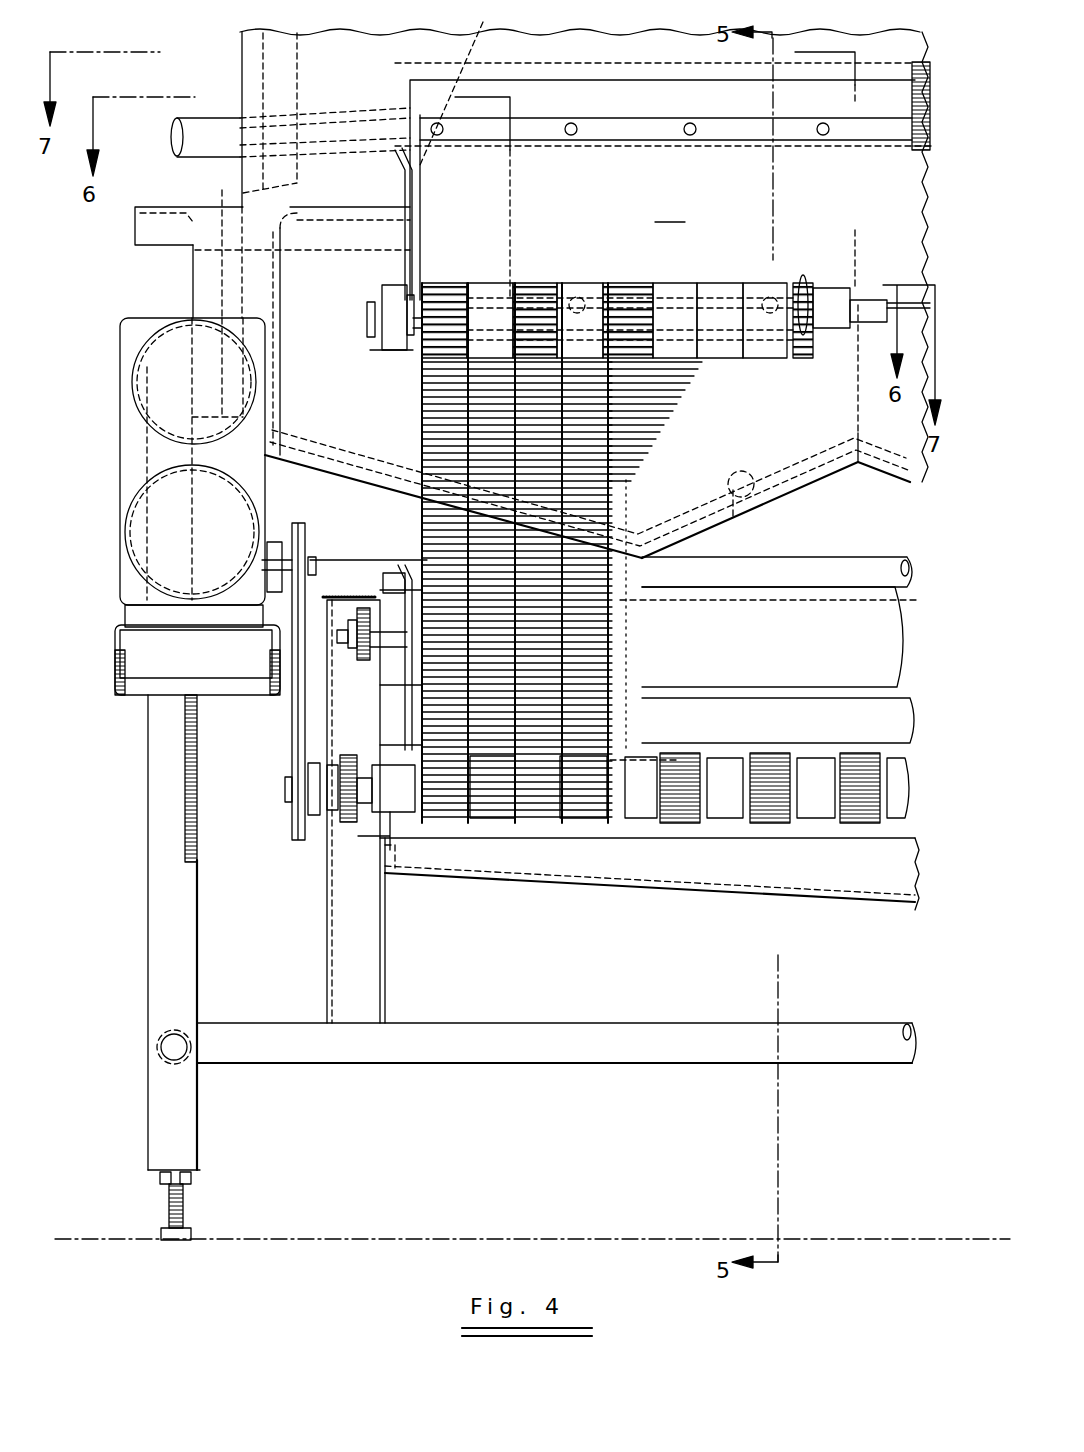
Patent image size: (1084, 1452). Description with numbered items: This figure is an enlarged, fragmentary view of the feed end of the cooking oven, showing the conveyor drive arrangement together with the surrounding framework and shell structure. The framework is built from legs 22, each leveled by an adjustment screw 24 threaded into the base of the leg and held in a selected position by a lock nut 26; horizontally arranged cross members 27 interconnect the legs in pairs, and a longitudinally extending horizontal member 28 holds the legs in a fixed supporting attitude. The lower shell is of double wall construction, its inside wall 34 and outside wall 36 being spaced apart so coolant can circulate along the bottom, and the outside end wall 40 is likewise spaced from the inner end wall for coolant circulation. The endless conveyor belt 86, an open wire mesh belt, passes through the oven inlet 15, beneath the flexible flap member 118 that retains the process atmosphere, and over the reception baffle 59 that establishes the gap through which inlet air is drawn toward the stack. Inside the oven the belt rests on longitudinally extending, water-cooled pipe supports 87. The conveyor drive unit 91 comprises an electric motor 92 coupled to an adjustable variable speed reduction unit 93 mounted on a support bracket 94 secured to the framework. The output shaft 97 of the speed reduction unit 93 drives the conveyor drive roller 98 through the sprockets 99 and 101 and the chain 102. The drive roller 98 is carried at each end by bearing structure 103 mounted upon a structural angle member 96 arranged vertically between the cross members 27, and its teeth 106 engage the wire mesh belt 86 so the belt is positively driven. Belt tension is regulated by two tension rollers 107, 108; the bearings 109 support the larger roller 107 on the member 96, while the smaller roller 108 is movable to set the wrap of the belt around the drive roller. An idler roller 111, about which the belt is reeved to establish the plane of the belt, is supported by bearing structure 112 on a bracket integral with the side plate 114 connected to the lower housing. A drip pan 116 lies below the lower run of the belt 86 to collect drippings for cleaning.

The oven inlet 15 is at (705, 150).
The leg 22 is at (158, 940).
The adjustment screw 24 is at (180, 1222).
The lock nut 26 is at (188, 1180).
The cross member 27 is at (560, 1035).
The longitudinally extending horizontal member 28 is at (178, 1030).
The inside wall 34 is at (509, 506).
The outside wall 36 is at (762, 510).
The outside end wall 40 is at (775, 434).
The reception baffle 59 is at (388, 86).
The endless conveyor belt 86 is at (420, 505).
The pipe support 87 is at (578, 283).
The conveyor drive unit 91 is at (116, 446).
The electric motor 92 is at (180, 396).
The variable speed reduction unit 93 is at (226, 536).
The support bracket 94 is at (113, 650).
The structural angle member 96 is at (328, 945).
The output shaft 97 is at (316, 568).
The conveyor drive roller 98 is at (408, 804).
The sprocket 99 is at (272, 545).
The sprocket 101 is at (320, 818).
The chain 102 is at (298, 742).
The bearing structure 103 is at (346, 756).
The teeth 106 is at (840, 800).
The tension roller 107 is at (832, 652).
The tension roller 108 is at (832, 734).
The bearing 109 is at (364, 660).
The idler roller 111 is at (800, 350).
The bearing structure 112 is at (395, 357).
The side plate 114 is at (400, 232).
The drip pan 116 is at (553, 880).
The flexible flap member 118 is at (670, 210).